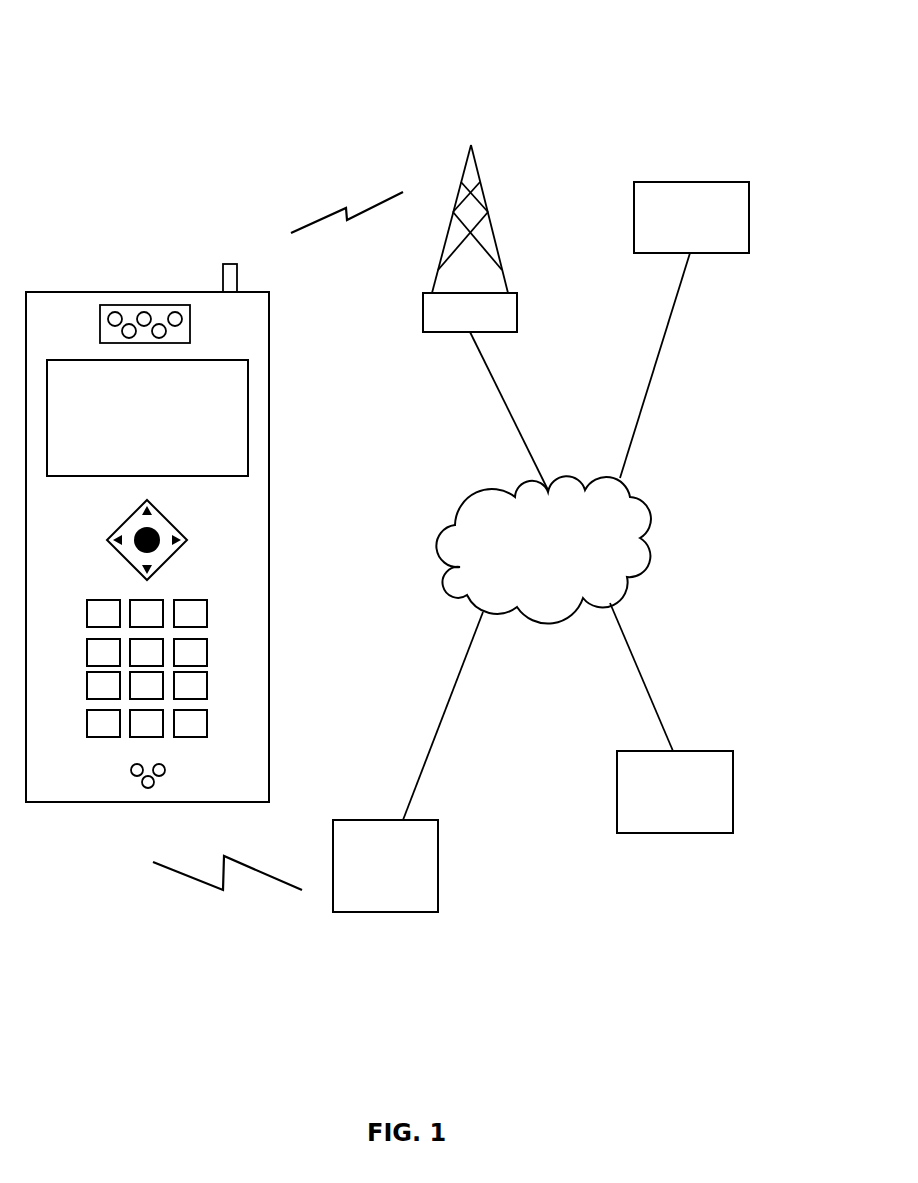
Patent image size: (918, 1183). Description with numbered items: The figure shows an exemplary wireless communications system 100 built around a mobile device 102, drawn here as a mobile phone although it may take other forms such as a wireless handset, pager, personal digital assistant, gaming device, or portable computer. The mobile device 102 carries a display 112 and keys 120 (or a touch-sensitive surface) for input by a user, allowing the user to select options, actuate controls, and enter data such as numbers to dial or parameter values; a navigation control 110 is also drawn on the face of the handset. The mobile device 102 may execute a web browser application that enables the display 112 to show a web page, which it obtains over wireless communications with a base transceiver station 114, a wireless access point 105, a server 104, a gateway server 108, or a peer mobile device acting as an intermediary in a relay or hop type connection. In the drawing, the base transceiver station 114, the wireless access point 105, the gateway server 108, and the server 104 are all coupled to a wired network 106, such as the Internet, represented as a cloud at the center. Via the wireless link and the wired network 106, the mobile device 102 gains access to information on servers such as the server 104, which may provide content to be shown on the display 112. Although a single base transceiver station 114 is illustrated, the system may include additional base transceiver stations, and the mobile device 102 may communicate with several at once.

The wireless communications system 100 is at (94, 106).
The mobile device 102 is at (60, 291).
The server 104 is at (647, 833).
The wireless access point 105 is at (380, 912).
The wired network 106 is at (655, 550).
The gateway server 108 is at (749, 217).
The navigation control 110 is at (278, 572).
The display 112 is at (250, 408).
The base transceiver station 114 is at (517, 300).
The keys 120 is at (283, 768).